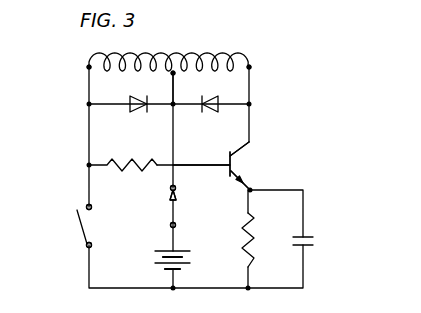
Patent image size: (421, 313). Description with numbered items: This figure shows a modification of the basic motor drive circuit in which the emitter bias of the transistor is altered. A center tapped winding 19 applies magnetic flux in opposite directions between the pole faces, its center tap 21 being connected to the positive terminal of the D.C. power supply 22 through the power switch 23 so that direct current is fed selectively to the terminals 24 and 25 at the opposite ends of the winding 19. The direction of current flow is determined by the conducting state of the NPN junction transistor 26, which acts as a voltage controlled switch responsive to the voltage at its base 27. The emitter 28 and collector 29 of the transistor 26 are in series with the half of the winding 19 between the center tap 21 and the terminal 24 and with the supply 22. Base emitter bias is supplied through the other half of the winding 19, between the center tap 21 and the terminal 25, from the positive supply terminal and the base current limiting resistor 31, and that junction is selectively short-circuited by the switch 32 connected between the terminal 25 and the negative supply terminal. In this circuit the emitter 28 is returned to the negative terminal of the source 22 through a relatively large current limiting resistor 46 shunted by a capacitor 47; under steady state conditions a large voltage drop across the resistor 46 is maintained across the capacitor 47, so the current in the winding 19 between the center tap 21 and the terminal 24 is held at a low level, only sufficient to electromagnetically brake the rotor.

The center tapped winding 19 is at (152, 52).
The center tap 21 is at (173, 73).
The D.C. power supply 22 is at (155, 252).
The power switch 23 is at (176, 224).
The terminal 24 is at (249, 67).
The terminal 25 is at (89, 67).
The NPN junction transistor 26 is at (252, 164).
The base 27 is at (229, 155).
The emitter 28 is at (236, 186).
The collector 29 is at (252, 150).
The base current limiting resistor 31 is at (135, 158).
The switch 32 is at (83, 226).
The current limiting resistor 46 is at (245, 262).
The capacitor 47 is at (313, 238).